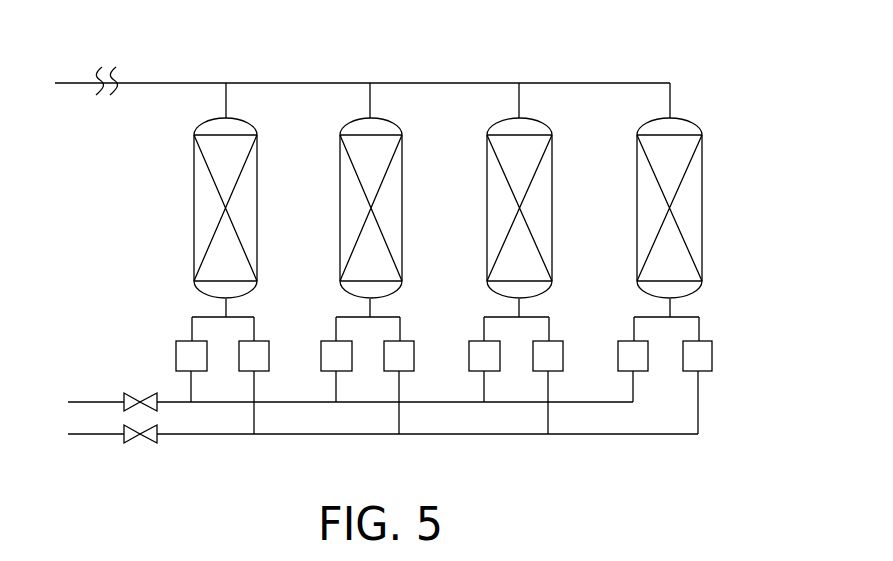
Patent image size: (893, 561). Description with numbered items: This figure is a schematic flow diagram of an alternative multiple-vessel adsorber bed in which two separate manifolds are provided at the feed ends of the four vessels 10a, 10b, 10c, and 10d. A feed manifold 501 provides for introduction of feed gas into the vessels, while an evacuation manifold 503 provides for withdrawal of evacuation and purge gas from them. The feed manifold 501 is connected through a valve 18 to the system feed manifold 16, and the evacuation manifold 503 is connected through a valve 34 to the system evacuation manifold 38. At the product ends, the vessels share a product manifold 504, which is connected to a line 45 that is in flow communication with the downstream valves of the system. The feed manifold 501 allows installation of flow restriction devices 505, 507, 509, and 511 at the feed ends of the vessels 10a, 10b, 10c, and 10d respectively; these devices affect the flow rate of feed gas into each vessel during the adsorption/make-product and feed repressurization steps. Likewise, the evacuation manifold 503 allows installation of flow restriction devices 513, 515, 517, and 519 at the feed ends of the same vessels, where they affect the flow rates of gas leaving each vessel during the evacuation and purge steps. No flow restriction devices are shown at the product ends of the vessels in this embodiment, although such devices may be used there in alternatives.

The line 45 is at (75, 83).
The product manifold 504 is at (430, 83).
The vessel 10a is at (257, 193).
The vessel 10b is at (402, 196).
The vessel 10c is at (552, 196).
The vessel 10d is at (702, 199).
The flow restriction device 505 is at (176, 358).
The flow restriction device 507 is at (321, 359).
The flow restriction device 509 is at (469, 359).
The flow restriction device 511 is at (618, 360).
The flow restriction device 513 is at (269, 352).
The flow restriction device 515 is at (414, 352).
The flow restriction device 517 is at (563, 352).
The flow restriction device 519 is at (712, 356).
The feed manifold 16 is at (103, 402).
The valve 18 is at (156, 406).
The evacuation manifold 38 is at (103, 434).
The valve 34 is at (148, 441).
The feed manifold 501 is at (352, 402).
The evacuation manifold 503 is at (517, 434).